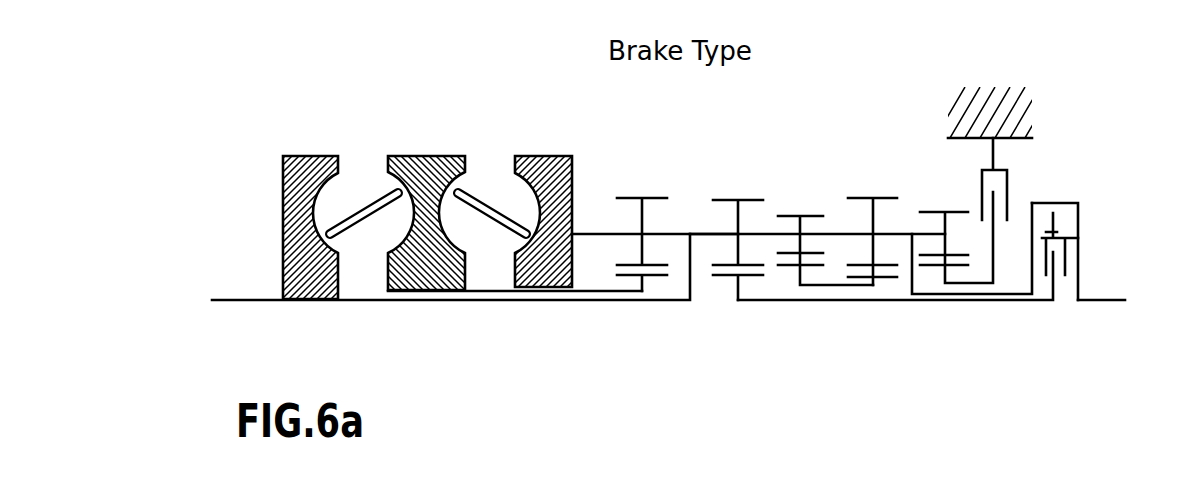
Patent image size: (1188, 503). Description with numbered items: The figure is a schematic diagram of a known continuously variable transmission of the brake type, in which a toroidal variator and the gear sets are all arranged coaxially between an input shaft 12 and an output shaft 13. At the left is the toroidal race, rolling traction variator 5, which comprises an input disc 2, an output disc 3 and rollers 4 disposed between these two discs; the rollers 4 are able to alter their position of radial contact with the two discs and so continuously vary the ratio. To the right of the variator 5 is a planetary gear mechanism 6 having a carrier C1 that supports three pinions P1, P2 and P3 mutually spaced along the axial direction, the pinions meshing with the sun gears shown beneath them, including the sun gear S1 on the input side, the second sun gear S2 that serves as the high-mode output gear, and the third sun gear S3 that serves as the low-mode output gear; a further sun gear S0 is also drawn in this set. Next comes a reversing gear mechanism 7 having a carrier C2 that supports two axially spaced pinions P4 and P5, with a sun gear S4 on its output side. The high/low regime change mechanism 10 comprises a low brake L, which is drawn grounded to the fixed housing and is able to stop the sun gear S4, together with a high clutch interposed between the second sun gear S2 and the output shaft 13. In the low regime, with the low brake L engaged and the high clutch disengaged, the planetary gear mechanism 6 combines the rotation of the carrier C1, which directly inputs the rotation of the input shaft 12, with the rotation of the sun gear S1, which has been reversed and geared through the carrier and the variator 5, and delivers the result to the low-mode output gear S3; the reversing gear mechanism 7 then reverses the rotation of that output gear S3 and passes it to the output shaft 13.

The input disc 2 is at (294, 156).
The output disc 3 is at (418, 156).
The rollers 4 is at (383, 201).
The toroidal race, rolling traction variator 5 is at (450, 125).
The planetary gear mechanism 6 is at (739, 183).
The reversing gear mechanism 7 is at (873, 180).
The high/low regime change mechanism 10 is at (1058, 195).
The input shaft 12 is at (257, 298).
The output shaft 13 is at (1098, 300).
The pinion P1 is at (644, 198).
The pinion P2 is at (728, 199).
The pinion P3 is at (778, 215).
The pinion P4 is at (855, 198).
The pinion P5 is at (938, 212).
The sun gear S0 is at (885, 278).
The sun gear on the input side S1 is at (655, 278).
The second sun gear (high-mode output gear) S2 is at (725, 278).
The low-mode output gear (third sun gear) S3 is at (787, 267).
The sun gear S4 is at (932, 270).
The carrier C1 is at (703, 233).
The carrier C2 is at (895, 233).
The low brake L is at (995, 153).